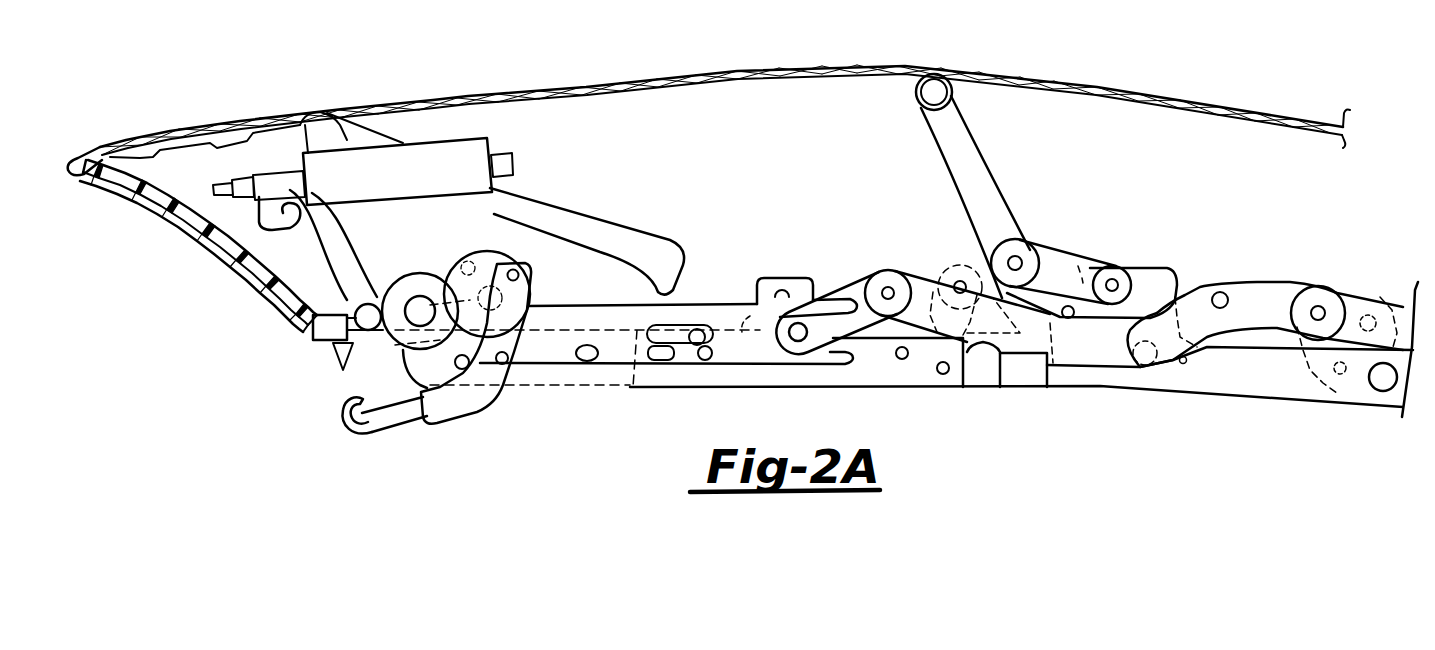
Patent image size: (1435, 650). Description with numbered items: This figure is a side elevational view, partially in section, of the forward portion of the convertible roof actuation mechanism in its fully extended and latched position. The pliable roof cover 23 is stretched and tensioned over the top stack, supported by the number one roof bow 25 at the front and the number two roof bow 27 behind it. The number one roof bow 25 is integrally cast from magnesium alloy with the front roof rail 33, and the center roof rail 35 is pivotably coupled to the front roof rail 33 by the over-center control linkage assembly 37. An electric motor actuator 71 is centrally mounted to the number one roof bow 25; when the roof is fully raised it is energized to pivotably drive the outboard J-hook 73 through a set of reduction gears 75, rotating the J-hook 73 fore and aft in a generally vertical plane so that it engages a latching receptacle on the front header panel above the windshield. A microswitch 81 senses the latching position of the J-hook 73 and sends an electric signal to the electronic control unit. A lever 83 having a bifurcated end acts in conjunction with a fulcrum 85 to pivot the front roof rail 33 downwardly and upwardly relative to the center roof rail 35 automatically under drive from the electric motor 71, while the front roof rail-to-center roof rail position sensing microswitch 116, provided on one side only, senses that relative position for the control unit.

The pliable roof cover 23 is at (170, 173).
The number one roof bow 25 is at (198, 246).
The number two roof bow 27 is at (952, 120).
The front roof rail 33 is at (703, 378).
The center roof rail 35 is at (1182, 380).
The over-center control linkage assembly 37 is at (1127, 330).
The electric motor actuator 71 is at (420, 157).
The J-hook 73 is at (388, 420).
The reduction gears 75 is at (427, 262).
The microswitch 81 is at (305, 326).
The lever 83 is at (773, 353).
The fulcrum 85 is at (696, 335).
The front roof rail-to-center roof rail position sensing microswitch 116 is at (1024, 375).